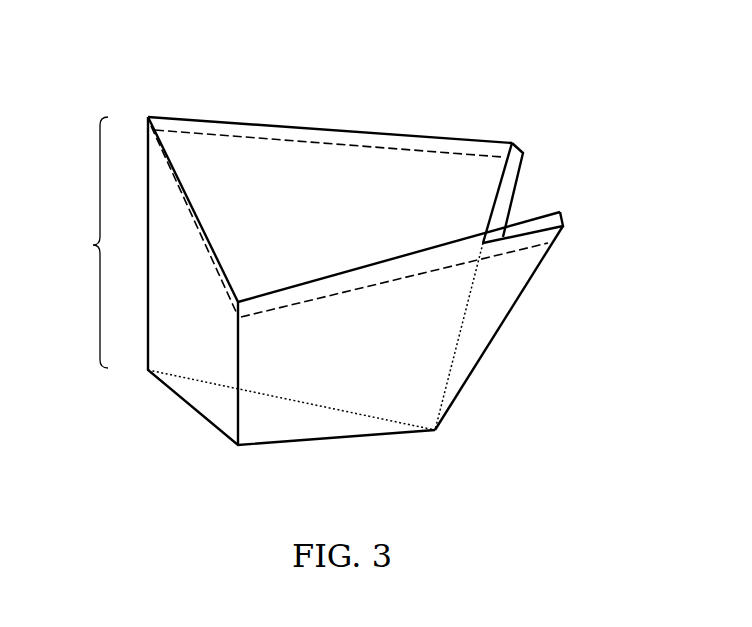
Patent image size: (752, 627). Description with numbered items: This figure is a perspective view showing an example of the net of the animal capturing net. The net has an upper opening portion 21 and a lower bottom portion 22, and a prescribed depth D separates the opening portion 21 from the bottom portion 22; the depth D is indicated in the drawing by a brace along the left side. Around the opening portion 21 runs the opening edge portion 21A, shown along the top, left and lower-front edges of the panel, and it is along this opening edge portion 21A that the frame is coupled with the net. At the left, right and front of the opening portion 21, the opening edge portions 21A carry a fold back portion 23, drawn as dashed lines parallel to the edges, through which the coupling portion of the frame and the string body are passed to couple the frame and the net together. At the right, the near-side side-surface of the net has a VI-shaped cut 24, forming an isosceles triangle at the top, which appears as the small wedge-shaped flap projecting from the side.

The opening portion 21 is at (354, 199).
The opening edge portion 21A is at (237, 119).
The bottom portion 22 is at (292, 428).
The fold back portion 23 is at (435, 150).
The VI-shaped cut 24 is at (535, 192).
The depth D is at (89, 242).